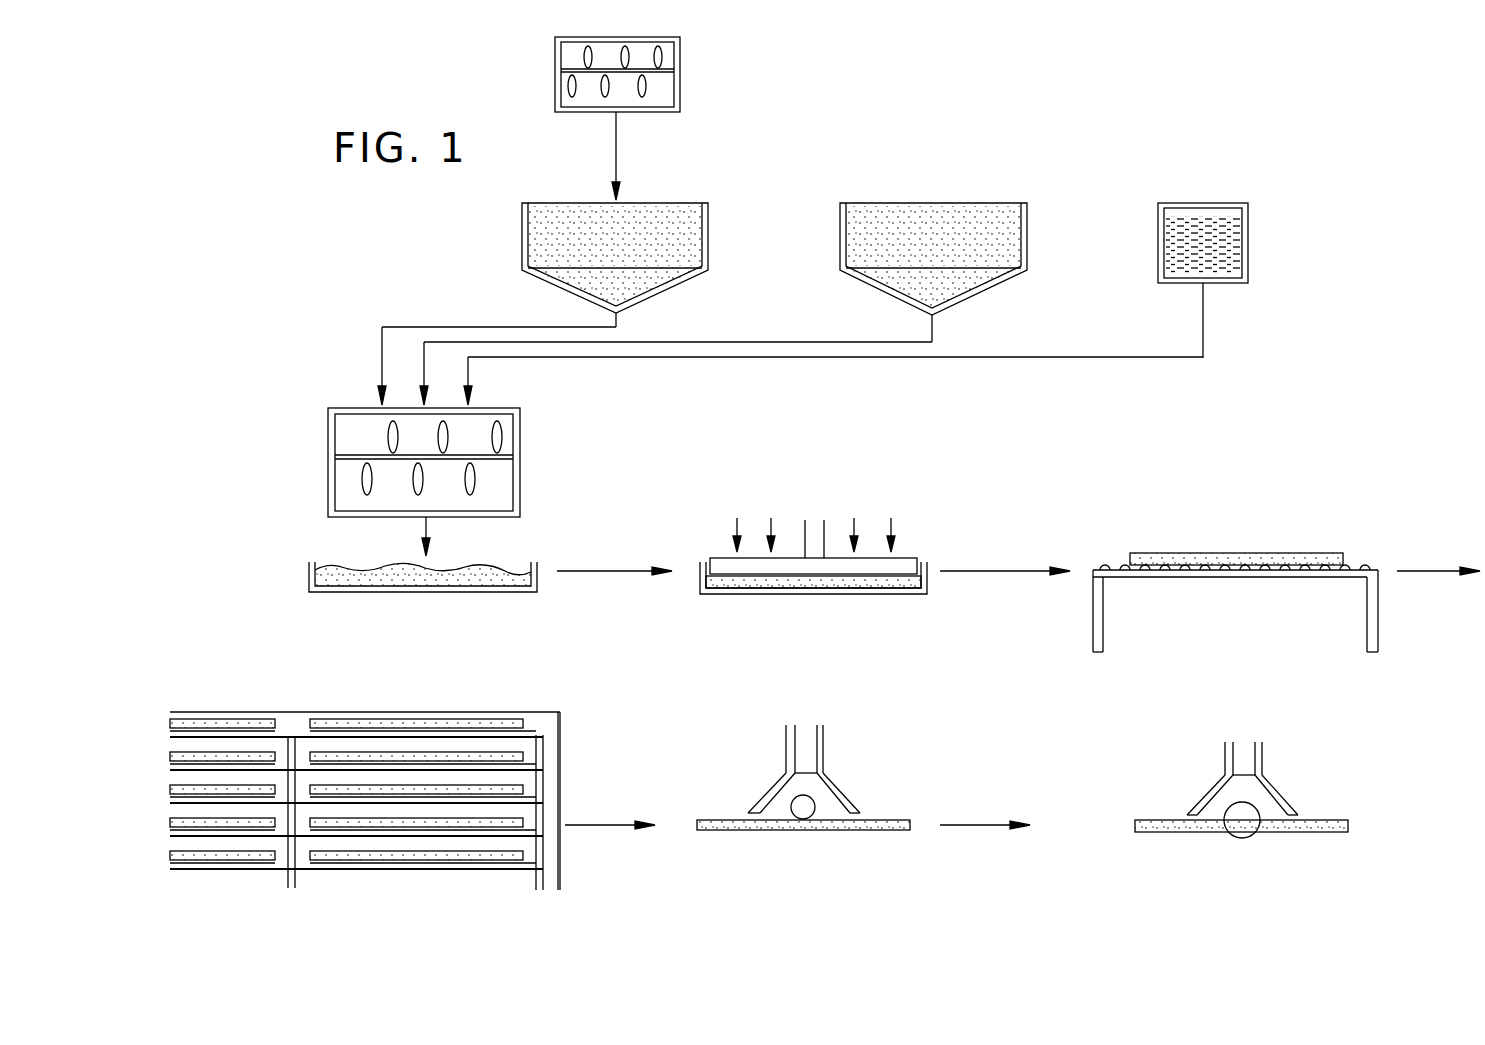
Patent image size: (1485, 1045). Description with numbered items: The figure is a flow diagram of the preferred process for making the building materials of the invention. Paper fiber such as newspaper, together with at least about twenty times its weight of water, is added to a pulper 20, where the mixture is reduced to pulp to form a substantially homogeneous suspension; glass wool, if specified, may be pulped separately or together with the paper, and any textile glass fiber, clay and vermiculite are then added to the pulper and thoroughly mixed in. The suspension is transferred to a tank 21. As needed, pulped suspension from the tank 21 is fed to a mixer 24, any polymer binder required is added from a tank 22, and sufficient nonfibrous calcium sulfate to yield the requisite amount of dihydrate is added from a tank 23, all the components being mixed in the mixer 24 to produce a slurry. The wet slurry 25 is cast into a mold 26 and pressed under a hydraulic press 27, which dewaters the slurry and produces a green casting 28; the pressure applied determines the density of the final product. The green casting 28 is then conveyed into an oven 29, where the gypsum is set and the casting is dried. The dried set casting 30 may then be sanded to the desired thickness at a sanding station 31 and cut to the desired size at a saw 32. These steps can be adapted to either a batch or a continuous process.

The pulper 20 is at (678, 70).
The tank 21 is at (707, 228).
The tank 22 is at (1027, 228).
The tank 23 is at (1247, 237).
The mixer 24 is at (520, 436).
The wet slurry 25 is at (493, 572).
The mold 26 is at (531, 596).
The hydraulic press 27 is at (907, 553).
The green casting 28 is at (870, 590).
The oven 29 is at (545, 711).
The dried set casting 30 is at (908, 820).
The sanding station 31 is at (803, 806).
The saw 32 is at (1243, 818).